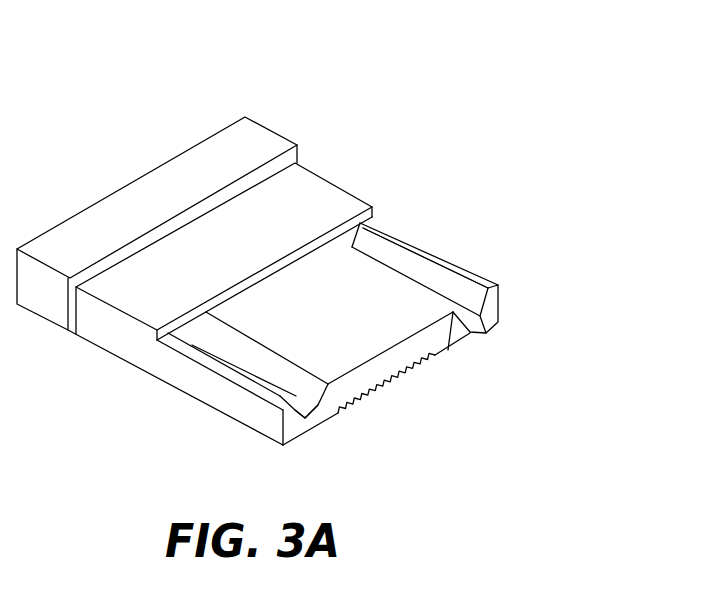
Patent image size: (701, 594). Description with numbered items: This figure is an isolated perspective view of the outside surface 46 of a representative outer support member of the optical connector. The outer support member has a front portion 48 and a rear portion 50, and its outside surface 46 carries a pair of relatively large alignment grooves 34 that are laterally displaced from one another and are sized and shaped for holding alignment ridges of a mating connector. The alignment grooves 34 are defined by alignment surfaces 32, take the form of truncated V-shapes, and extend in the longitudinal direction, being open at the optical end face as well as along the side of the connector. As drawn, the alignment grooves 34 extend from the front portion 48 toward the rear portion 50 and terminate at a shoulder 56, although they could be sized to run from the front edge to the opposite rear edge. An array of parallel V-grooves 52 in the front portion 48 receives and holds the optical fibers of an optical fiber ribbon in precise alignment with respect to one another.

The rear portion 50 is at (294, 121).
The outside surface 46 is at (307, 210).
The alignment surfaces 32 is at (213, 296).
The alignment grooves 34 is at (325, 405).
The front portion 48 is at (502, 251).
The V-grooves 52 is at (438, 372).
The shoulder 56 is at (262, 368).